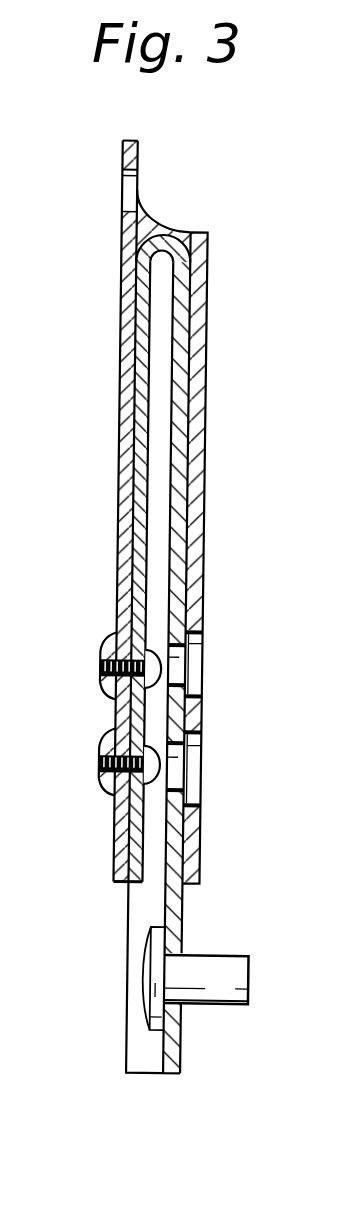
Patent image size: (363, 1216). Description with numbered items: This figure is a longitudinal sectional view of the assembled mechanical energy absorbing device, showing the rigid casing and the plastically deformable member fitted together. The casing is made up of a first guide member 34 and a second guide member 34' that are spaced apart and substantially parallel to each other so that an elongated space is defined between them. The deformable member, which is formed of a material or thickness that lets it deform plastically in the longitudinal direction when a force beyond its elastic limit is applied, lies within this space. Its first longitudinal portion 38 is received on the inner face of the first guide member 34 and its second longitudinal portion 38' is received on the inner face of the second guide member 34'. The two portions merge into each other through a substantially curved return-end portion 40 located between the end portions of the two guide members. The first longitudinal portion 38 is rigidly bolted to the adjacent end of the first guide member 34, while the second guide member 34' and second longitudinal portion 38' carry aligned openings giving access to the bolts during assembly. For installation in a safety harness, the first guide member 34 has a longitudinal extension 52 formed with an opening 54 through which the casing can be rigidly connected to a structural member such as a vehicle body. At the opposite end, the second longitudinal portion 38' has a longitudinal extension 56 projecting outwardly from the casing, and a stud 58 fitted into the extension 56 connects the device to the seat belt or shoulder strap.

The first guide member 34 is at (113, 511).
The second guide member 34' is at (242, 593).
The first longitudinal portion 38 is at (113, 558).
The second longitudinal portion 38' is at (232, 608).
The return-end portion 40 is at (155, 235).
The longitudinal extension 52 is at (114, 140).
The opening 54 is at (117, 212).
The longitudinal extension 56 is at (183, 1048).
The stud 58 is at (253, 985).